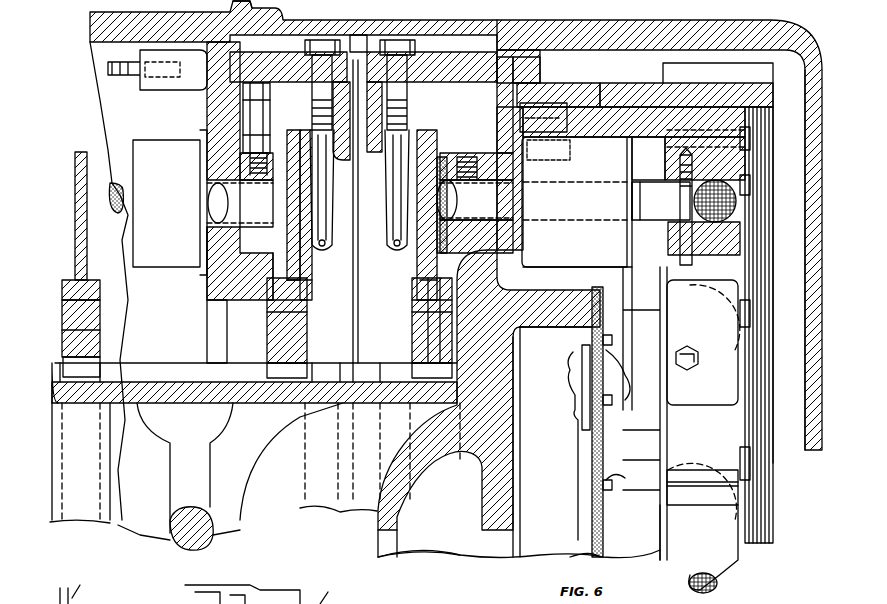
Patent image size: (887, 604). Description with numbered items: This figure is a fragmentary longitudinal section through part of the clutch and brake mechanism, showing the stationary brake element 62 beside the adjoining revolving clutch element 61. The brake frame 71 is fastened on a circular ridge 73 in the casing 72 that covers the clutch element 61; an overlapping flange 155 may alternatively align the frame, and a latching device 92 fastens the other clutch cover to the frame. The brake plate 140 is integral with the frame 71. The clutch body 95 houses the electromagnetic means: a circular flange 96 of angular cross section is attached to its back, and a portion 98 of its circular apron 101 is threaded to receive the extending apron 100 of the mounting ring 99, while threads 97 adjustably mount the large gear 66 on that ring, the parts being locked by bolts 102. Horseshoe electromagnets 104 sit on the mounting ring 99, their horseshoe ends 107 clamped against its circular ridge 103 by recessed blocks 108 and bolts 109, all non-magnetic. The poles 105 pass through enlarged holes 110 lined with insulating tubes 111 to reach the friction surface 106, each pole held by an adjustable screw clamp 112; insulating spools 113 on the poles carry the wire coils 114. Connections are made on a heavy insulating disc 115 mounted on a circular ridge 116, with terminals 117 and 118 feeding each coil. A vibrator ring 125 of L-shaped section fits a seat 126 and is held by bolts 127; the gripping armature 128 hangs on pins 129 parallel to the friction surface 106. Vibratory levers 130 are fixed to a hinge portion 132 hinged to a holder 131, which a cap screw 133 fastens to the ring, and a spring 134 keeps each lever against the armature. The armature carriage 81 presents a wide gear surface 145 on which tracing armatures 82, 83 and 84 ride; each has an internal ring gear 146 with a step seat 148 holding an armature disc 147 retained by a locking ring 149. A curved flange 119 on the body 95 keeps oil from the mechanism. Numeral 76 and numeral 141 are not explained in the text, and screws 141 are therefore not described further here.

The frame 71 is at (95, 40).
The casing 72 is at (782, 52).
The circular ridge 73 is at (280, 12).
The clutch element 61 is at (500, 558).
The brake element 62 is at (103, 105).
The large gear 66 is at (670, 70).
The member 76 is at (88, 587).
The armature carriage 81 is at (205, 540).
The tracing armature 82 is at (102, 318).
The tracing armature 83 is at (452, 355).
The gripping armature 84 is at (300, 352).
The latching device 92 is at (185, 587).
The clutch body 95 is at (515, 433).
The circular flange 96 is at (530, 65).
The threads 97 is at (768, 318).
The threaded portion 98 is at (640, 88).
The mounting ring 99 is at (640, 148).
The extending apron 100 is at (605, 137).
The circular apron 101 is at (575, 83).
The bolts 102 is at (752, 142).
The circular ridge 103 is at (738, 200).
The horseshoe electromagnets 104 is at (118, 190).
The poles 105 is at (232, 193).
The friction surface 106 is at (278, 270).
The horseshoe ends 107 is at (706, 280).
The recessed blocks 108 is at (740, 228).
The bolts 109 is at (692, 208).
The enlarged holes 110 is at (527, 243).
The tubes 111 is at (210, 207).
The adjustable screw clamp 112 is at (235, 150).
The insulating spools 113 is at (250, 140).
The wire coils 114 is at (150, 255).
The insulating disc 115 is at (598, 540).
The circular ridge 116 is at (556, 340).
The terminal 117 is at (572, 365).
The terminal 118 is at (605, 412).
The curved flange 119 is at (410, 470).
The vibrator ring 125 is at (430, 55).
The seat 126 is at (493, 45).
The bolts 127 is at (543, 117).
The gripping armature 128 is at (305, 280).
The pins 129 is at (548, 150).
The vibratory levers 130 is at (322, 250).
The holder 131 is at (243, 120).
The hinge portion 132 is at (397, 250).
The cap screw 133 is at (400, 40).
The spring 134 is at (355, 180).
The brake plate 140 is at (225, 310).
The screw 141 is at (108, 68).
The gear surface 145 is at (180, 372).
The internal ring gear 146 is at (92, 400).
The armature disc 147 is at (76, 210).
The step seat 148 is at (75, 333).
The locking ring 149 is at (68, 283).
The overlapping flange 155 is at (332, 591).